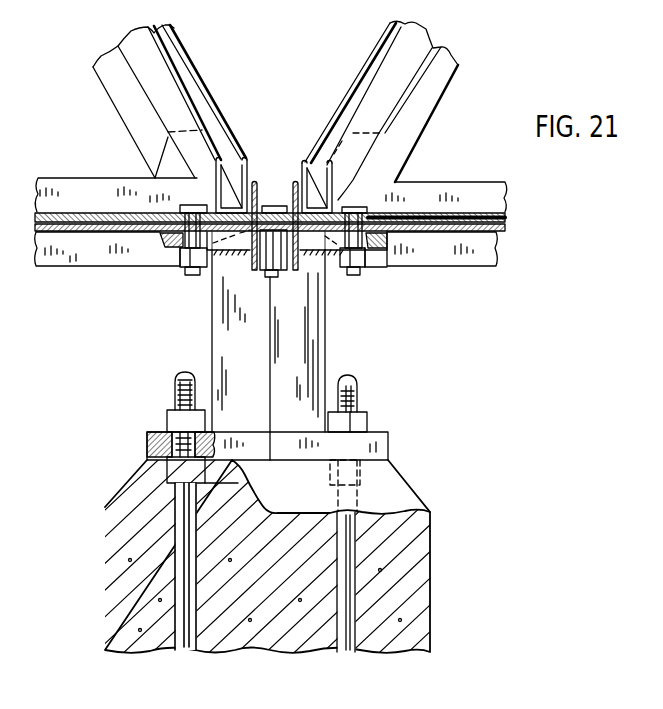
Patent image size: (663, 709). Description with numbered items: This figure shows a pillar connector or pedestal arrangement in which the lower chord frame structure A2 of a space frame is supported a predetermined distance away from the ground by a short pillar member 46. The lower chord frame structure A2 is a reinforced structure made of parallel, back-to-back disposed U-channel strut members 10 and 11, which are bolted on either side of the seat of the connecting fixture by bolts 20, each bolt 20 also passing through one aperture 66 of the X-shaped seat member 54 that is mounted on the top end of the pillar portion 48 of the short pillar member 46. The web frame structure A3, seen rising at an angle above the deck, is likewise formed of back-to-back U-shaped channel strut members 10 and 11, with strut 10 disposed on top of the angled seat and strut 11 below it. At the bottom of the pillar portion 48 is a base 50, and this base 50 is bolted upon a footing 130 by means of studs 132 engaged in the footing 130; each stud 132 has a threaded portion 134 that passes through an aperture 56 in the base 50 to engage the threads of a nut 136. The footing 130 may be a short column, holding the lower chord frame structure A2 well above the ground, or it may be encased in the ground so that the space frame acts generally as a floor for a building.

The lower chord frame structure A2 is at (92, 176).
The web frame structure A3 is at (360, 59).
The strut member 10 is at (332, 112).
The strut member 11 is at (123, 88).
The bolt 20 is at (185, 204).
The aperture 66 is at (180, 246).
The X-shaped seat member 54 is at (374, 262).
The pillar portion 48 is at (228, 323).
The short pillar member 46 is at (329, 339).
The base 50 is at (378, 447).
The mounting hole 56 is at (172, 447).
The threaded portion 134 is at (175, 383).
The nut 136 is at (165, 415).
The footing 130 is at (412, 565).
The stud 132 is at (189, 633).